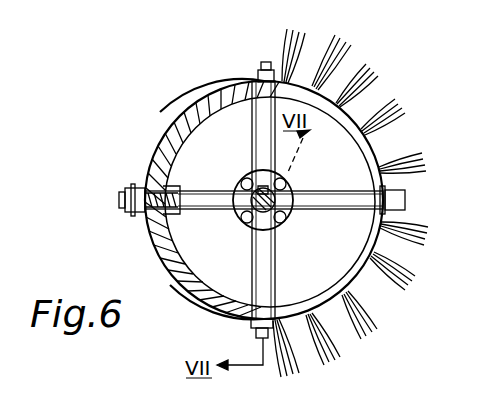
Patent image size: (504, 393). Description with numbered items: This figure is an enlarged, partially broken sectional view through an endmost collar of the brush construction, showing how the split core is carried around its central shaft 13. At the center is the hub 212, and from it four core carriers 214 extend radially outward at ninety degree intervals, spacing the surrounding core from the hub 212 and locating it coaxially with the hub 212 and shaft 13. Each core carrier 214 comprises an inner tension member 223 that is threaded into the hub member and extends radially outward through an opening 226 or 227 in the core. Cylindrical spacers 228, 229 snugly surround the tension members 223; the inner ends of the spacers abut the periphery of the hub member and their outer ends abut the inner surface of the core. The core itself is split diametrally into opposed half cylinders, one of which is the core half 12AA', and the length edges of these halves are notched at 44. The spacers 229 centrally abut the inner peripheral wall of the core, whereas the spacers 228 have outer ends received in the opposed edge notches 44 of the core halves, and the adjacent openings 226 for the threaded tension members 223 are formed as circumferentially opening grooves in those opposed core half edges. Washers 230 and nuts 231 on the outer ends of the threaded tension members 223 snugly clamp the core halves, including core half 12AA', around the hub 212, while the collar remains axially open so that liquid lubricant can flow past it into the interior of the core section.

The core half cylinder 12AA' is at (177, 105).
The shaft 13 is at (270, 198).
The edge notches 44 is at (148, 190).
The hub 212 is at (230, 226).
The core carrier 214 is at (175, 190).
The inner tension member 223 is at (135, 202).
The opening 226 is at (170, 205).
The opening 227 is at (265, 138).
The cylindrical spacer 228 is at (182, 187).
The cylindrical spacer 229 is at (222, 99).
The washer 230 is at (133, 216).
The nut 231 is at (122, 211).